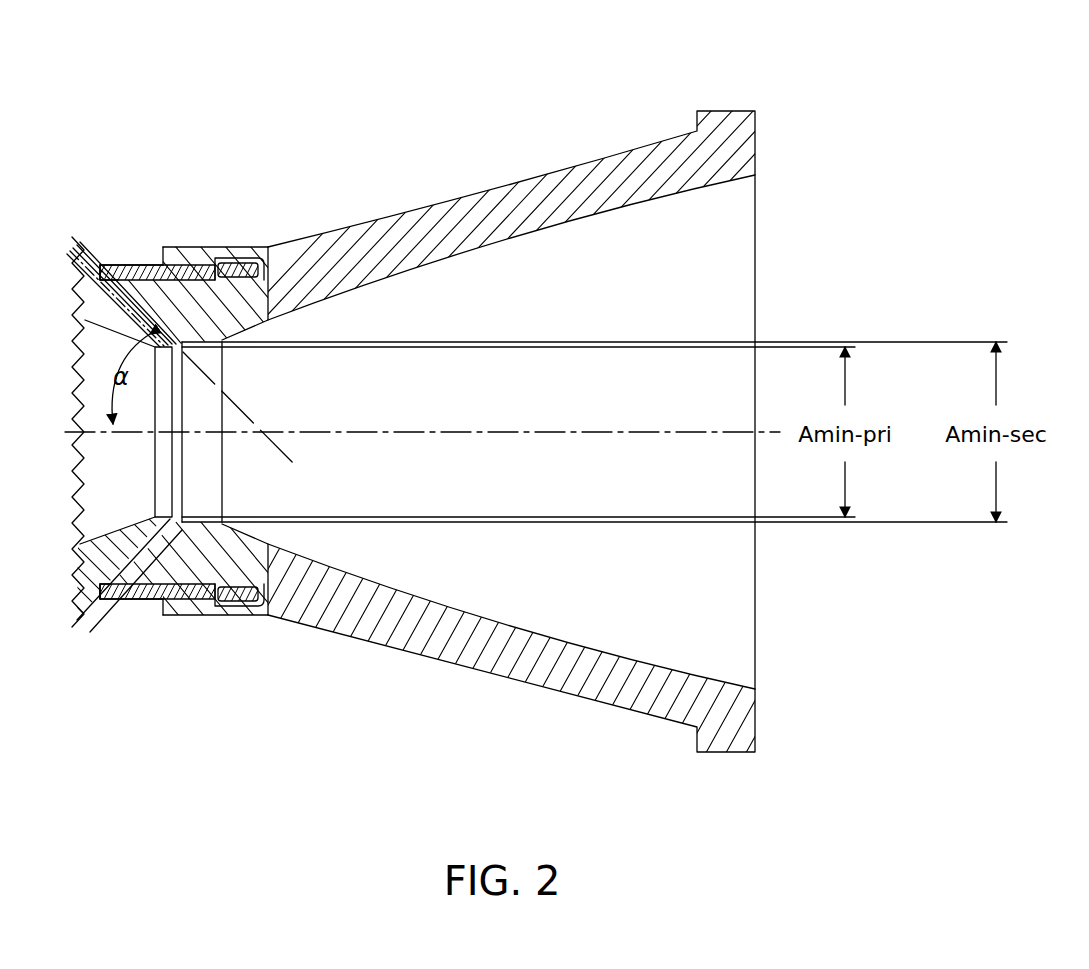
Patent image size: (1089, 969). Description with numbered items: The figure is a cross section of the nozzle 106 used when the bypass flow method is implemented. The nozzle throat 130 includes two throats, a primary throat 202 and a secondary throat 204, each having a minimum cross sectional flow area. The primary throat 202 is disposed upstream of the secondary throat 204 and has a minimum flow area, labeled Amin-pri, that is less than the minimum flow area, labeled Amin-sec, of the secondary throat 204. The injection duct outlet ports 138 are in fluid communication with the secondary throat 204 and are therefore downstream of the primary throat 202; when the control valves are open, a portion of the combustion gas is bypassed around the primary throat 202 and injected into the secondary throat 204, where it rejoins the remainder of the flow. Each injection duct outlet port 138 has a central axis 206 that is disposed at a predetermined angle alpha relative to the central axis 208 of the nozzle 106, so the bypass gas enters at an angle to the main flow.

The nozzle 106 is at (427, 130).
The nozzle throat 130 is at (206, 322).
The injection duct outlet ports 138 is at (174, 335).
The primary throat 202 is at (157, 515).
The secondary throat 204 is at (208, 522).
The central axis of injection duct outlet port 206 is at (243, 400).
The central axis of nozzle 208 is at (472, 432).